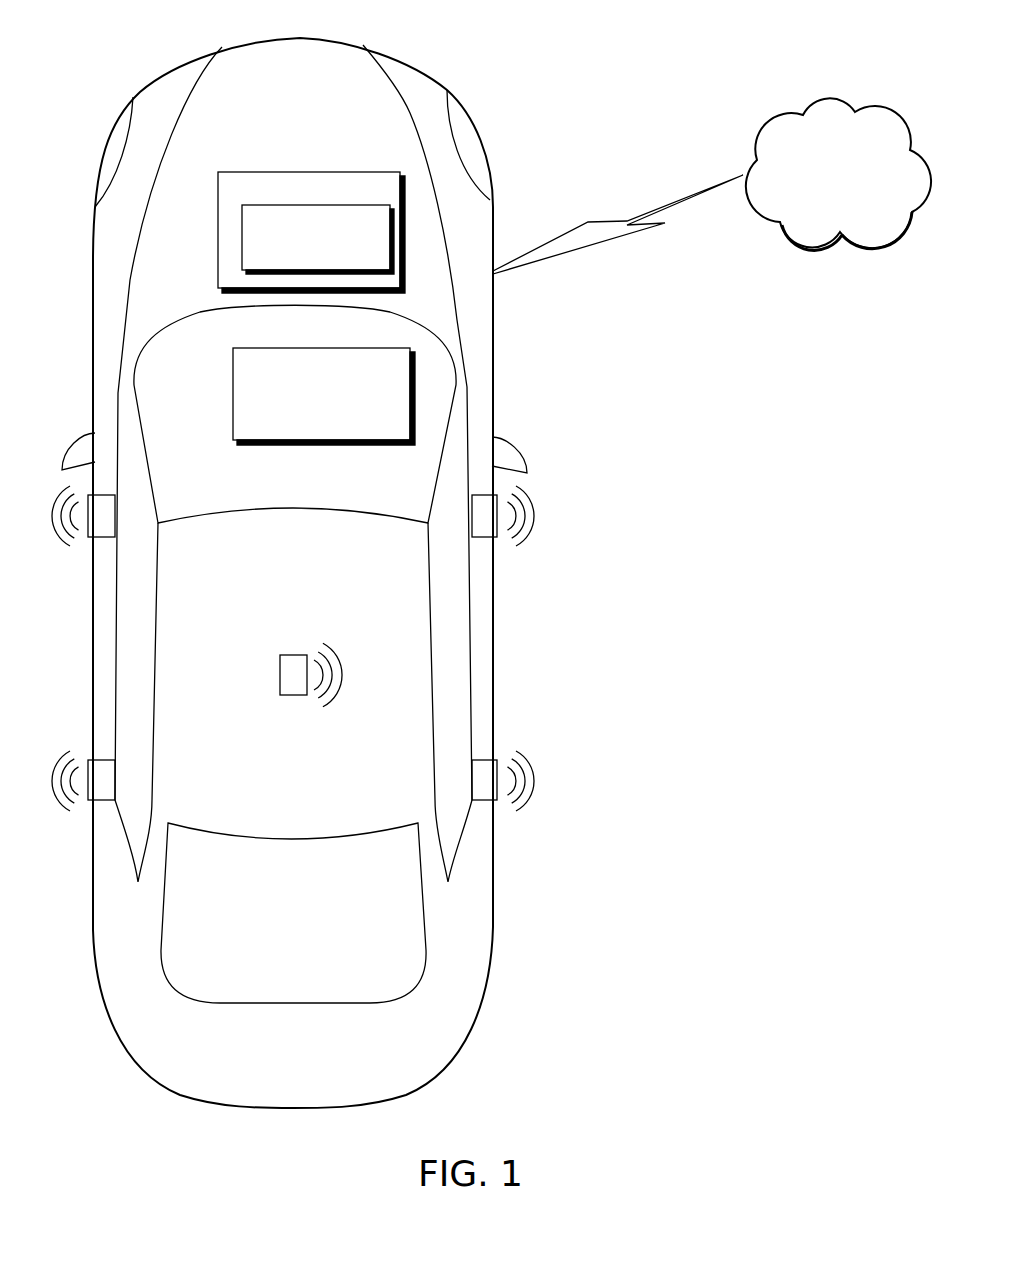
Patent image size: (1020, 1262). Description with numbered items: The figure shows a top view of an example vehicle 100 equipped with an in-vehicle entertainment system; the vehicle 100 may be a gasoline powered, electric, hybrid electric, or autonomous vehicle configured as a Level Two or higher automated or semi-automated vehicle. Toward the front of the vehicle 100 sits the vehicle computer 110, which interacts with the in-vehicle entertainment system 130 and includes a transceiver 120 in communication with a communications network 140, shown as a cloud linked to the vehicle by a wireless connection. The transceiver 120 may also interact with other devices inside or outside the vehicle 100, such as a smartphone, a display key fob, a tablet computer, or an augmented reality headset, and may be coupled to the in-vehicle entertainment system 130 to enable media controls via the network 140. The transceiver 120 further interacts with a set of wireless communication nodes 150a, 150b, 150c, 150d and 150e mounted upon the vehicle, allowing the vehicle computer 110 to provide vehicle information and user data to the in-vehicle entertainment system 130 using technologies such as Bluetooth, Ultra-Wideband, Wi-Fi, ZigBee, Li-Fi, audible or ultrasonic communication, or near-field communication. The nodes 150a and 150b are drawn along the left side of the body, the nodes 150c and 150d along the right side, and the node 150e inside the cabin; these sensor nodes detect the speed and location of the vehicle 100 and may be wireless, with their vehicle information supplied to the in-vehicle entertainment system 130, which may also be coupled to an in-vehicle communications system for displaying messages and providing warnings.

The vehicle 100 is at (485, 137).
The vehicle computer 110 is at (218, 236).
The transceiver 120 is at (318, 239).
The in-vehicle entertainment system 130 is at (233, 392).
The communications network 140 is at (855, 124).
The wireless communication node 150a is at (88, 537).
The wireless communication node 150b is at (88, 800).
The wireless communication node 150c is at (497, 537).
The wireless communication node 150d is at (497, 800).
The wireless communication node 150e is at (280, 676).